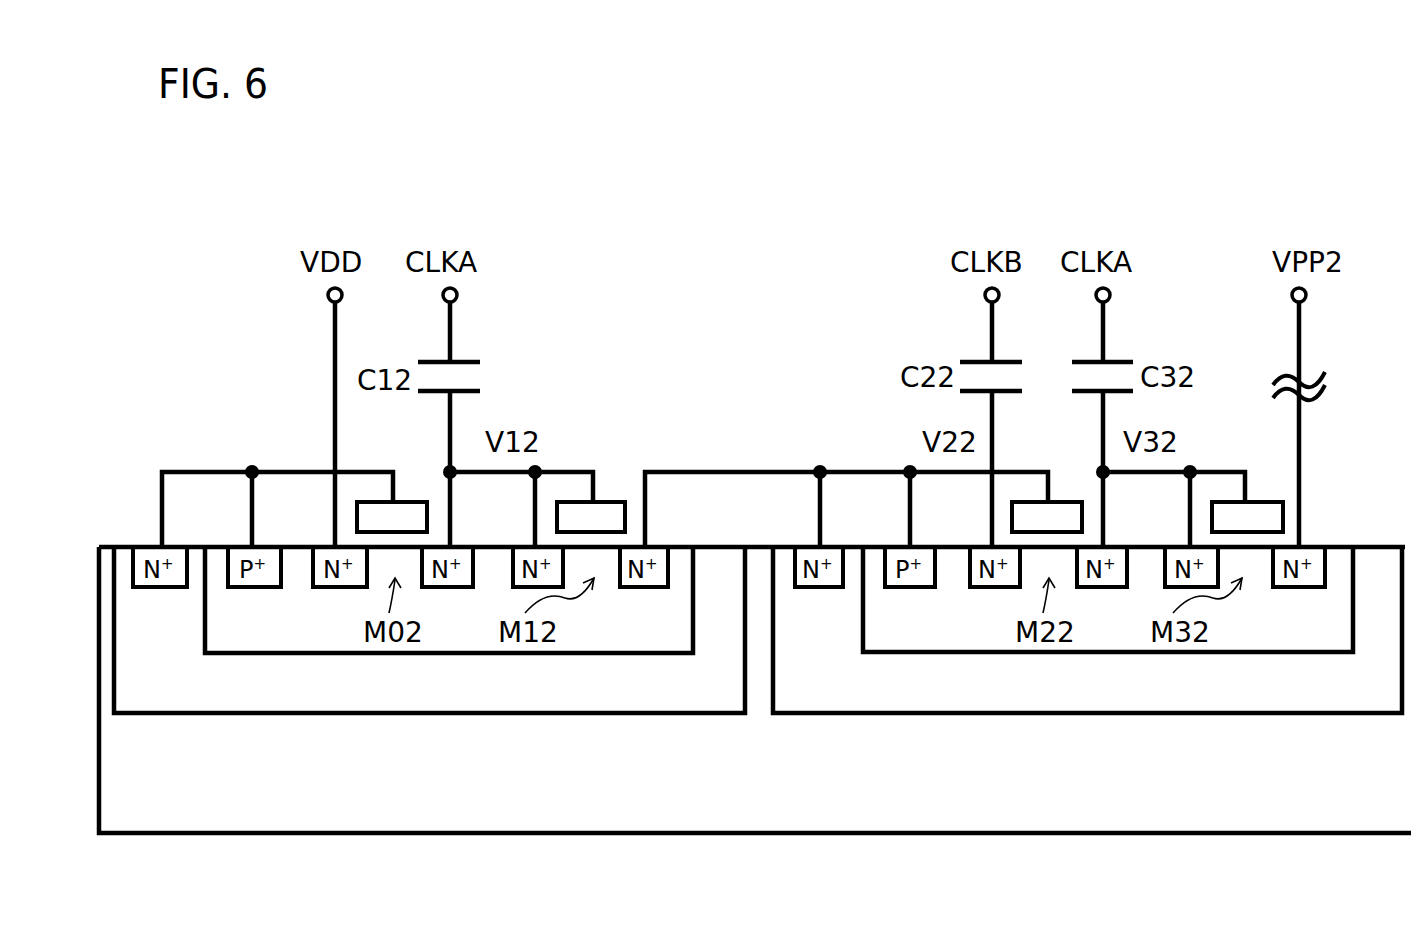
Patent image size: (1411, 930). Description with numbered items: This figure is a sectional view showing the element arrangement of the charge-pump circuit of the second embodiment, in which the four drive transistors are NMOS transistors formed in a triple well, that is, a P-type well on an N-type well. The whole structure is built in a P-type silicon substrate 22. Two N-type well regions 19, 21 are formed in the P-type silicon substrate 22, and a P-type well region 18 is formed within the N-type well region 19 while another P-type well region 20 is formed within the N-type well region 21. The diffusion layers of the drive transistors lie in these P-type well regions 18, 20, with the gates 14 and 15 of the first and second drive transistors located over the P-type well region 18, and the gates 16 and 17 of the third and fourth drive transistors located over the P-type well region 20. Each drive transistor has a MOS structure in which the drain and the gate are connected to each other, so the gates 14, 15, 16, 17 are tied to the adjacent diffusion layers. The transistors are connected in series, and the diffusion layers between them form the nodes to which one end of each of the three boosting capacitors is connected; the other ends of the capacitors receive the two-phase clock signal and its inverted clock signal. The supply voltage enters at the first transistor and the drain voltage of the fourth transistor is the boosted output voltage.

The gate 14 is at (410, 500).
The gate 15 is at (612, 500).
The gate 16 is at (1068, 500).
The gate 17 is at (1266, 500).
The P-type well region 18 is at (680, 622).
The N-type well region 19 is at (653, 703).
The P-type well region 20 is at (1337, 622).
The N-type well region 21 is at (1318, 700).
The P-type silicon substrate 22 is at (813, 806).